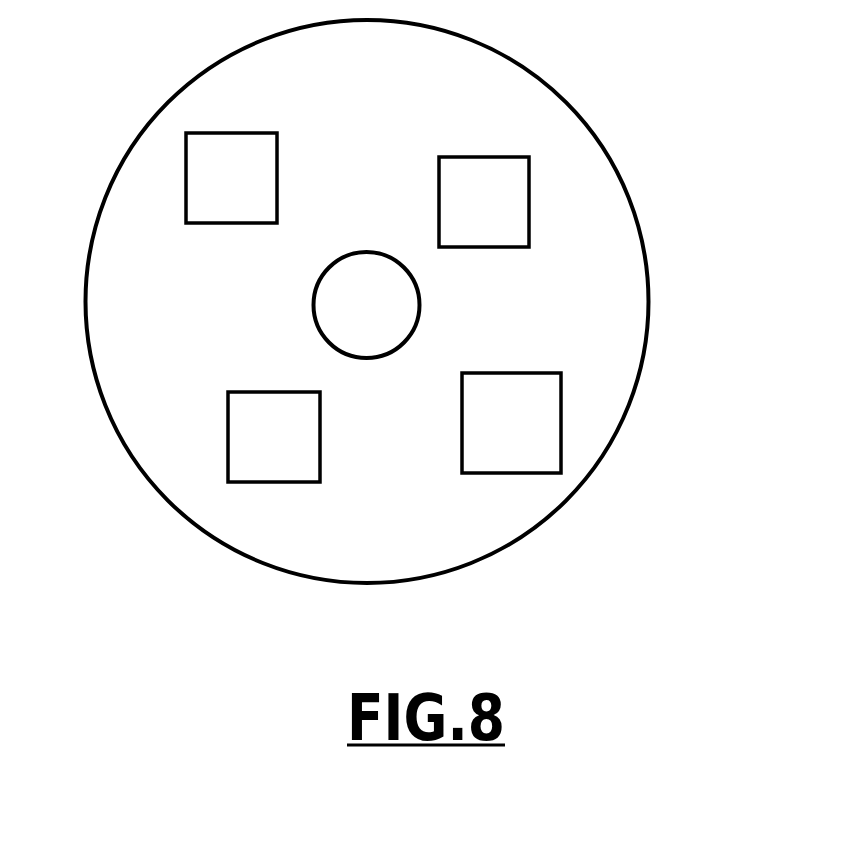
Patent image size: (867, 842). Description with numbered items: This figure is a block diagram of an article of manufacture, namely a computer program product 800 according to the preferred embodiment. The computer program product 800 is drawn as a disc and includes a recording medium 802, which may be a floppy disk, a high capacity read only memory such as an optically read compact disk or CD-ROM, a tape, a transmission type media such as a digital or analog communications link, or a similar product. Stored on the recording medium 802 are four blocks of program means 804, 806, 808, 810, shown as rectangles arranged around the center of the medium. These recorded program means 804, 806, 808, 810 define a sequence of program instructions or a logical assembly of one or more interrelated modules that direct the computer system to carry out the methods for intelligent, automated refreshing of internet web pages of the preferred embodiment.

The computer program product 800 is at (606, 111).
The recording medium 802 is at (128, 132).
The program means 804 is at (484, 202).
The program means 806 is at (511, 423).
The program means 808 is at (274, 437).
The program means 810 is at (231, 178).